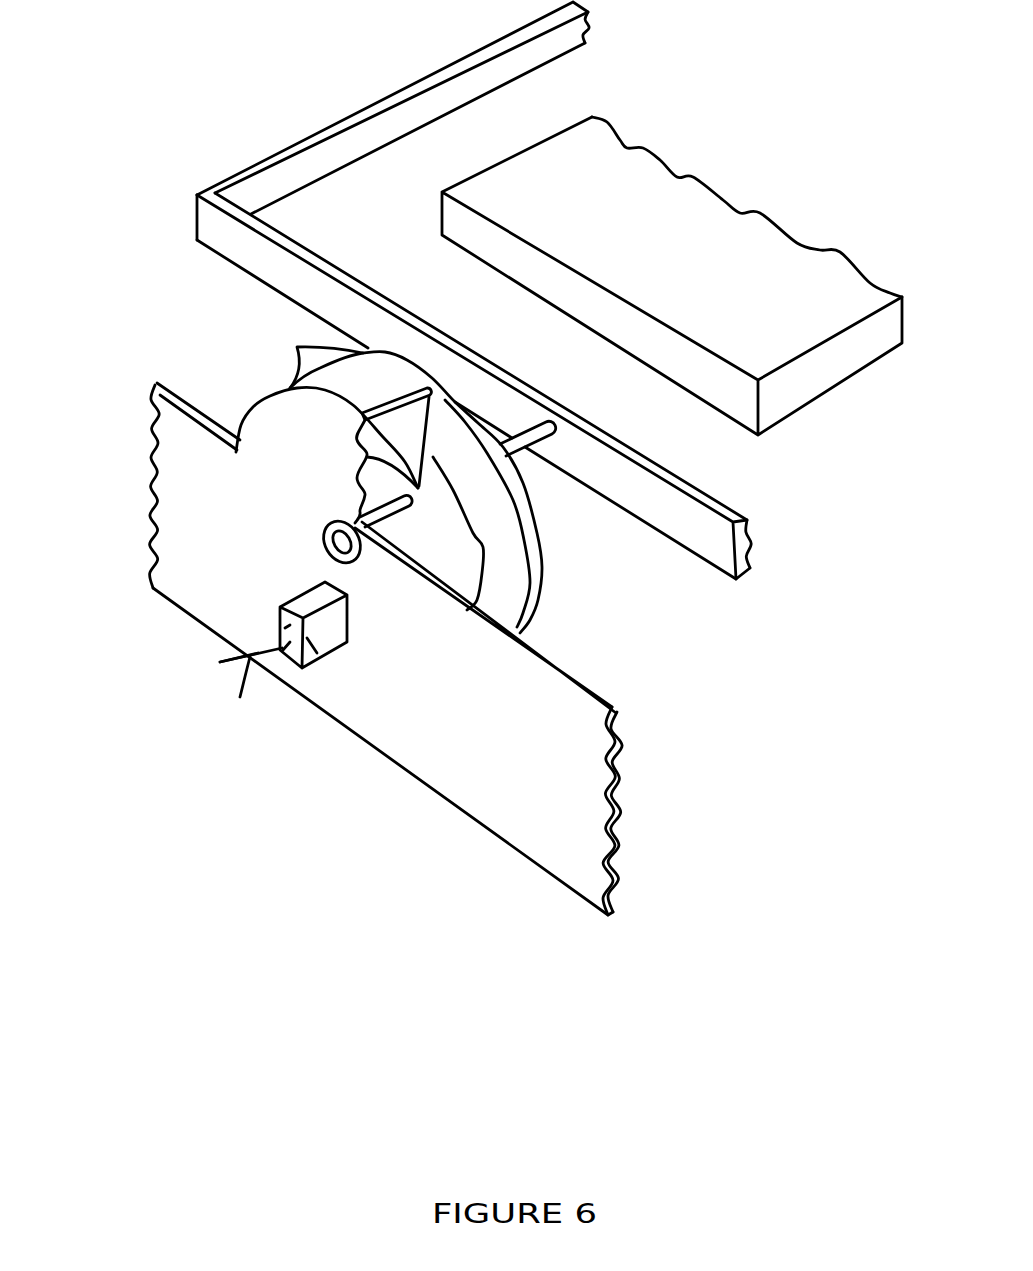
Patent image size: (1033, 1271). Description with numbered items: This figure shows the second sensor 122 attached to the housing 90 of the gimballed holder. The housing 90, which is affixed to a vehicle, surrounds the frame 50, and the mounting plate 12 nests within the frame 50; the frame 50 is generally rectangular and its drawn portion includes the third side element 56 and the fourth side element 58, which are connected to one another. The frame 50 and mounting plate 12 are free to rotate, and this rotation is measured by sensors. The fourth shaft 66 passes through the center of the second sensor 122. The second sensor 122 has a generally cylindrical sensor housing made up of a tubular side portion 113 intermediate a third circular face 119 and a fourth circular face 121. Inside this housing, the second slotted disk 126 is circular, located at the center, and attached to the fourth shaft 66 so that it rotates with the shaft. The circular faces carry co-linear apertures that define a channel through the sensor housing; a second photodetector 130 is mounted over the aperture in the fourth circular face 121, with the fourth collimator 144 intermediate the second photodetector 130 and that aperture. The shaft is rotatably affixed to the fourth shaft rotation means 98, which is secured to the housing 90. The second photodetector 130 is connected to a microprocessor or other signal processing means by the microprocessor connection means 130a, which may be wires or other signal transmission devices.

The mounting plate 12 is at (643, 163).
The frame 50 is at (394, 289).
The third side element 56 is at (405, 110).
The fourth side element 58 is at (260, 267).
The fourth shaft 66 is at (520, 447).
The housing 90 is at (379, 631).
The fourth shaft rotation means 98 is at (327, 530).
The tubular side portion 113 is at (299, 349).
The third circular face 119 is at (537, 617).
The fourth circular face 121 is at (245, 410).
The second sensor 122 is at (372, 370).
The second slotted disk 126 is at (507, 572).
The second photodetector 130 is at (313, 647).
The microprocessor connection means 130a is at (258, 643).
The fourth collimator 144 is at (333, 627).